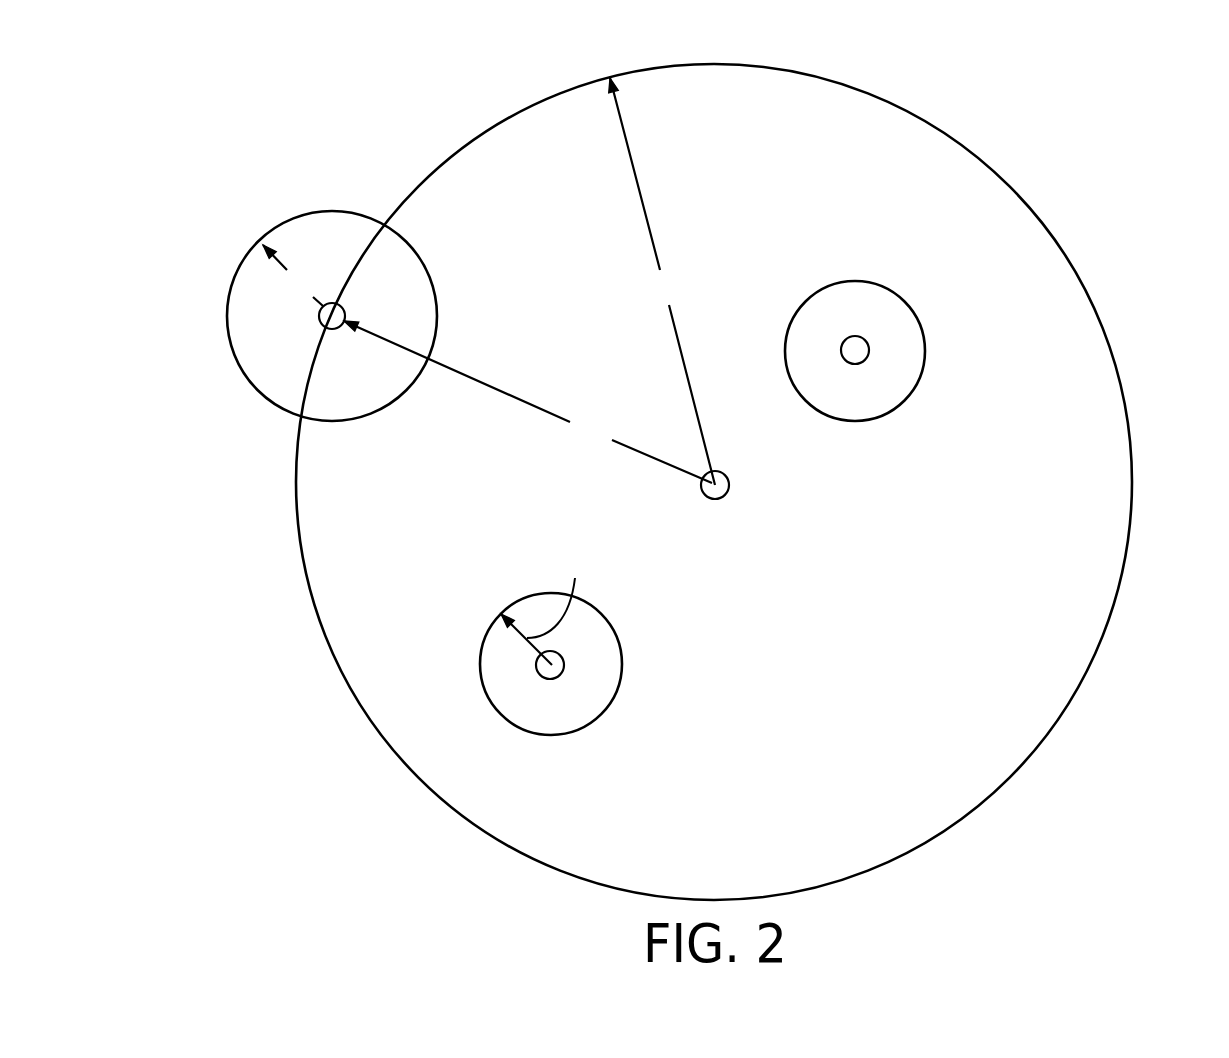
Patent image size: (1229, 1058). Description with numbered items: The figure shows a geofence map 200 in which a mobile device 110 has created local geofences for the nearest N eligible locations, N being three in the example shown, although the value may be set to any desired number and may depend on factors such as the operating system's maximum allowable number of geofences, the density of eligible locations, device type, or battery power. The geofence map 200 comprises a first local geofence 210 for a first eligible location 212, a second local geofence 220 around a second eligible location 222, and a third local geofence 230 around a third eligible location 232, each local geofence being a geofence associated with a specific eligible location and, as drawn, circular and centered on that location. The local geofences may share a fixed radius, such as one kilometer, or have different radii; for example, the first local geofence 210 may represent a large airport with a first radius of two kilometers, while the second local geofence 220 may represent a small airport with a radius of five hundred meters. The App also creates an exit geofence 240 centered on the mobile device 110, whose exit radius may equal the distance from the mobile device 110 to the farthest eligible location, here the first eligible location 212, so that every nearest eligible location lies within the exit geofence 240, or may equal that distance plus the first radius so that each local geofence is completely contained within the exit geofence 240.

The geofence map 200 is at (245, 105).
The exit geofence 240 is at (1087, 290).
The mobile device 110 is at (715, 498).
The first local geofence 210 is at (259, 390).
The first eligible location 212 is at (347, 305).
The second local geofence 220 is at (500, 715).
The second eligible location 222 is at (565, 666).
The third local geofence 230 is at (923, 365).
The third eligible location 232 is at (840, 350).